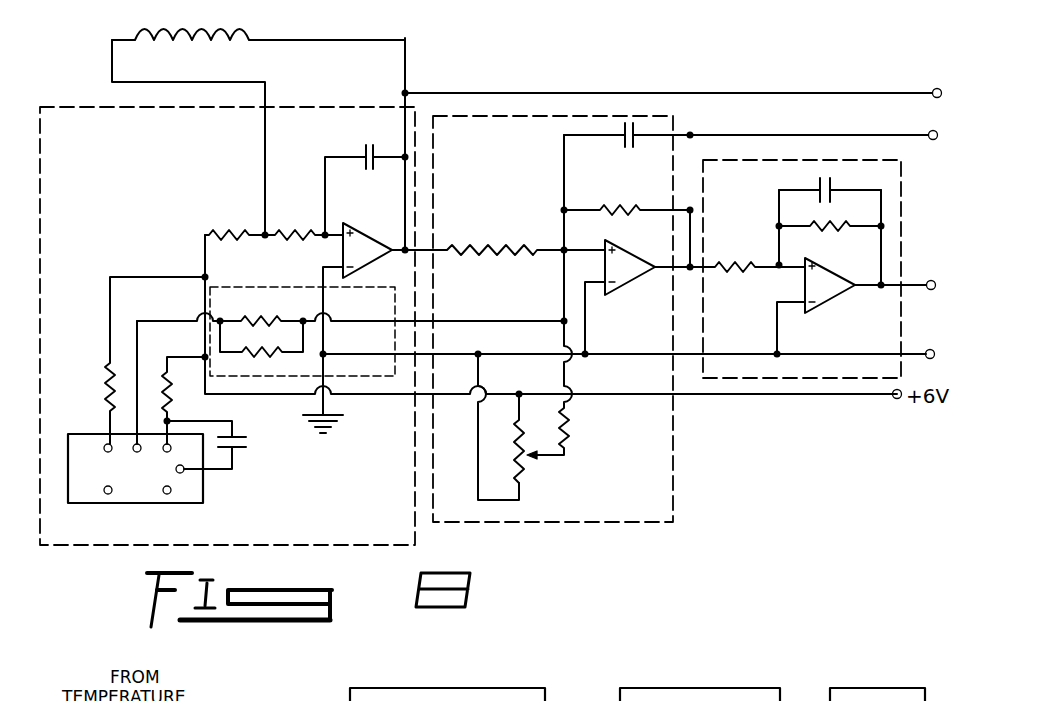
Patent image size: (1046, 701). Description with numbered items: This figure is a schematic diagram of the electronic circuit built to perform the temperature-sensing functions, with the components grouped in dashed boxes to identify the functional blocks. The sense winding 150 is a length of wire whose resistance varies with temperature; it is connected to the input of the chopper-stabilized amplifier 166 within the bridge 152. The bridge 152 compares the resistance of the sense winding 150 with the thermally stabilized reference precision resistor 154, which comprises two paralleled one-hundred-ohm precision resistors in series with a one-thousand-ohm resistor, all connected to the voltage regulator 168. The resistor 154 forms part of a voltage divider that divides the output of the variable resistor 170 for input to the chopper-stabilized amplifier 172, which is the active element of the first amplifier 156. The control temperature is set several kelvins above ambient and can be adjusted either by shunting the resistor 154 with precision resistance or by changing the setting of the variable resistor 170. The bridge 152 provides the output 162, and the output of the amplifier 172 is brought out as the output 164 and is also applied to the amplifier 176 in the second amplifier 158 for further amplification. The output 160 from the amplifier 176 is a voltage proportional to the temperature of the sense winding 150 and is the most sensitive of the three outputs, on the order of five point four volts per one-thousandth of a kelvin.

The sense winding 150 is at (208, 72).
The bridge 152 is at (418, 534).
The reference precision resistor 154 is at (227, 290).
The first amplifier 156 is at (675, 493).
The second amplifier 158 is at (762, 382).
The output 160 is at (891, 286).
The output of bridge 162 is at (759, 92).
The output of first amplifier 164 is at (792, 134).
The chopper-stabilized amplifier 166 is at (363, 237).
The voltage regulator 168 is at (154, 484).
The variable resistor 170 is at (532, 462).
The chopper-stabilized amplifier 172 is at (623, 280).
The amplifier 176 is at (826, 273).